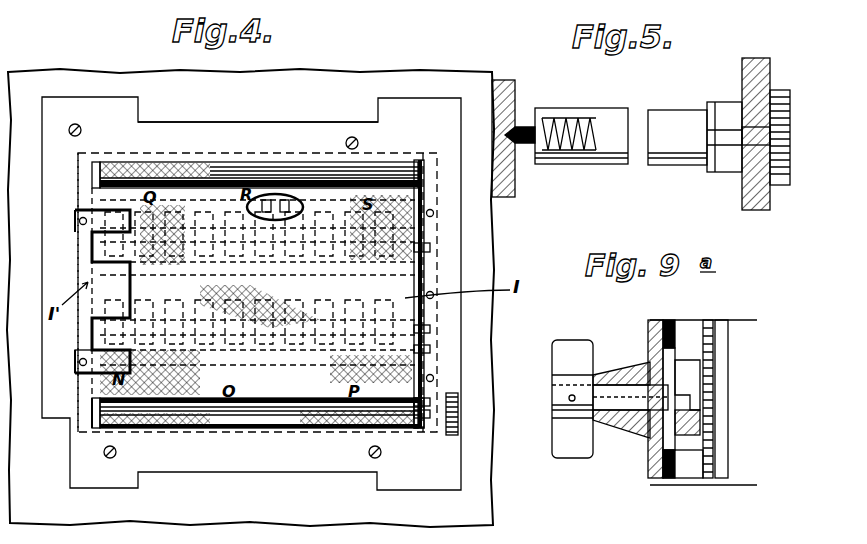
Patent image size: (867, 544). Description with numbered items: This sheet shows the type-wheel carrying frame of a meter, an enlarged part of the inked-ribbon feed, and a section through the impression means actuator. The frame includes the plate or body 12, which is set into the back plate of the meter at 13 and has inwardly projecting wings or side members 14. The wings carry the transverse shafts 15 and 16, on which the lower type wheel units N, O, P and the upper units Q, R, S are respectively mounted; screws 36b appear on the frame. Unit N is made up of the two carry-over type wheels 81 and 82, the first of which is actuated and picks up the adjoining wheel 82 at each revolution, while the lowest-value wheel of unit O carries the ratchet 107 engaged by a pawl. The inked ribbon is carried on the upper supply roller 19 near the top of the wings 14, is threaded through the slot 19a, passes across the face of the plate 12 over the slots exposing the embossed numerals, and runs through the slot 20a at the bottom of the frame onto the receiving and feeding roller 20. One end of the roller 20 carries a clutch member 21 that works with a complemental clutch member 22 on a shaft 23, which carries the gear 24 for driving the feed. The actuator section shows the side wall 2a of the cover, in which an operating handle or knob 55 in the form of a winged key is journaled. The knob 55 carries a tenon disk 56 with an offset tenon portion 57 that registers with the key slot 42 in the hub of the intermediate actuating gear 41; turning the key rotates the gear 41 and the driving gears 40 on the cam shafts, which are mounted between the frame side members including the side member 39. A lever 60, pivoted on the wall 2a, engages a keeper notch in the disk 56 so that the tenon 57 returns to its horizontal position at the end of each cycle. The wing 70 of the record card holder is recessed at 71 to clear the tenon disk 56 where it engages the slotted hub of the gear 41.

In FIG. 4, the plate or body 12 is at (251, 300).
In FIG. 4, the back plate setting 13 is at (324, 121).
In FIG. 4, the wings or side members 14 is at (82, 170).
In FIG. 5, the wings or side members 14 is at (502, 102).
In FIG. 4, the transverse shaft 15 is at (428, 337).
In FIG. 4, the transverse shaft 16 is at (90, 248).
In FIG. 4, the upper supply roller 19 is at (180, 178).
In FIG. 4, the slot 19a is at (259, 136).
In FIG. 5, the receiving and feeding roller 20 is at (612, 112).
In FIG. 4, the slot 20a is at (92, 420).
In FIG. 4, the clutch member 21 is at (418, 432).
In FIG. 5, the clutch member 21 is at (700, 165).
In FIG. 5, the complemental clutch member 22 is at (728, 102).
In FIG. 5, the shaft 23 is at (752, 160).
In FIG. 4, the gear 24 is at (458, 405).
In FIG. 5, the gear 24 is at (780, 88).
In FIG. 4, the screw 36b is at (116, 452).
In FIG. 4, the type wheel 81 is at (170, 400).
In FIG. 4, the type wheel 82 is at (75, 318).
In FIG. 4, the ratchet 107 is at (260, 412).
In FIG. 9A, the side wall 2a is at (668, 478).
In FIG. 9A, the side member 39 is at (722, 320).
In FIG. 9A, the driving gears 40 is at (710, 328).
In FIG. 9A, the intermediate actuating gear 41 is at (700, 375).
In FIG. 9A, the key slot 42 is at (700, 425).
In FIG. 9A, the operating handle or knob 55 is at (572, 345).
In FIG. 9A, the tenon disk 56 is at (640, 437).
In FIG. 9A, the offset tenon portion 57 is at (665, 395).
In FIG. 9A, the lever 60 is at (690, 345).
In FIG. 9A, the wing 70 is at (685, 478).
In FIG. 9A, the recess 71 is at (665, 395).